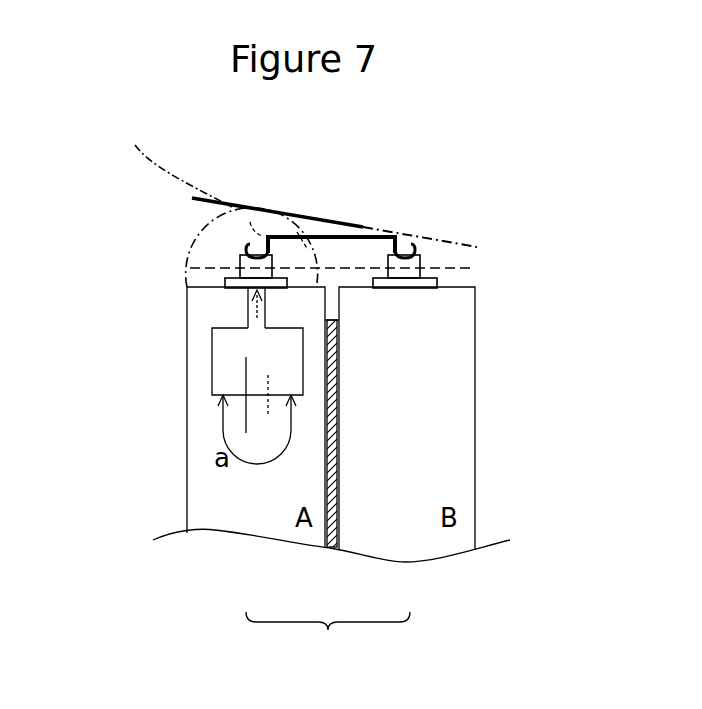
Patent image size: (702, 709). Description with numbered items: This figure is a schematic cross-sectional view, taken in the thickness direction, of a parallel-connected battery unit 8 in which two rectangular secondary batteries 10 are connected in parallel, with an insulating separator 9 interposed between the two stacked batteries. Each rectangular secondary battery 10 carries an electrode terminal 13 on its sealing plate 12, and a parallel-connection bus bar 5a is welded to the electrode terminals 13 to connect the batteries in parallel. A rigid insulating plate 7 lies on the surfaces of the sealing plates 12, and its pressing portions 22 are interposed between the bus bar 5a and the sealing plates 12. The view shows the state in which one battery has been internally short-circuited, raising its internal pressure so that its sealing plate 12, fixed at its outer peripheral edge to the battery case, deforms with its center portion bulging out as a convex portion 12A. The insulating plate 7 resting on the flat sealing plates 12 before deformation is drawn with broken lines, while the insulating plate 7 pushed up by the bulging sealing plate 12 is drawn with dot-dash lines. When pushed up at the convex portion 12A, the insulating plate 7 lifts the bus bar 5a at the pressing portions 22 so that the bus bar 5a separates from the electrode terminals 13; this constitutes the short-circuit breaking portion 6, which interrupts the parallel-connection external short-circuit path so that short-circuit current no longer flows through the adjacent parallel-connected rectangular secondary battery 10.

The parallel-connection bus bar 5a is at (333, 236).
The short-circuit breaking portion 6 is at (284, 204).
The insulating plate 7 is at (357, 330).
The parallel-connected battery unit 8 is at (328, 638).
The insulating separator 9 is at (340, 443).
The rectangular secondary battery 10 is at (255, 512).
The sealing plate 12 is at (196, 262).
The convex portion 12A is at (235, 212).
The electrode terminal 13 is at (243, 262).
The pressing portion 22 is at (362, 228).